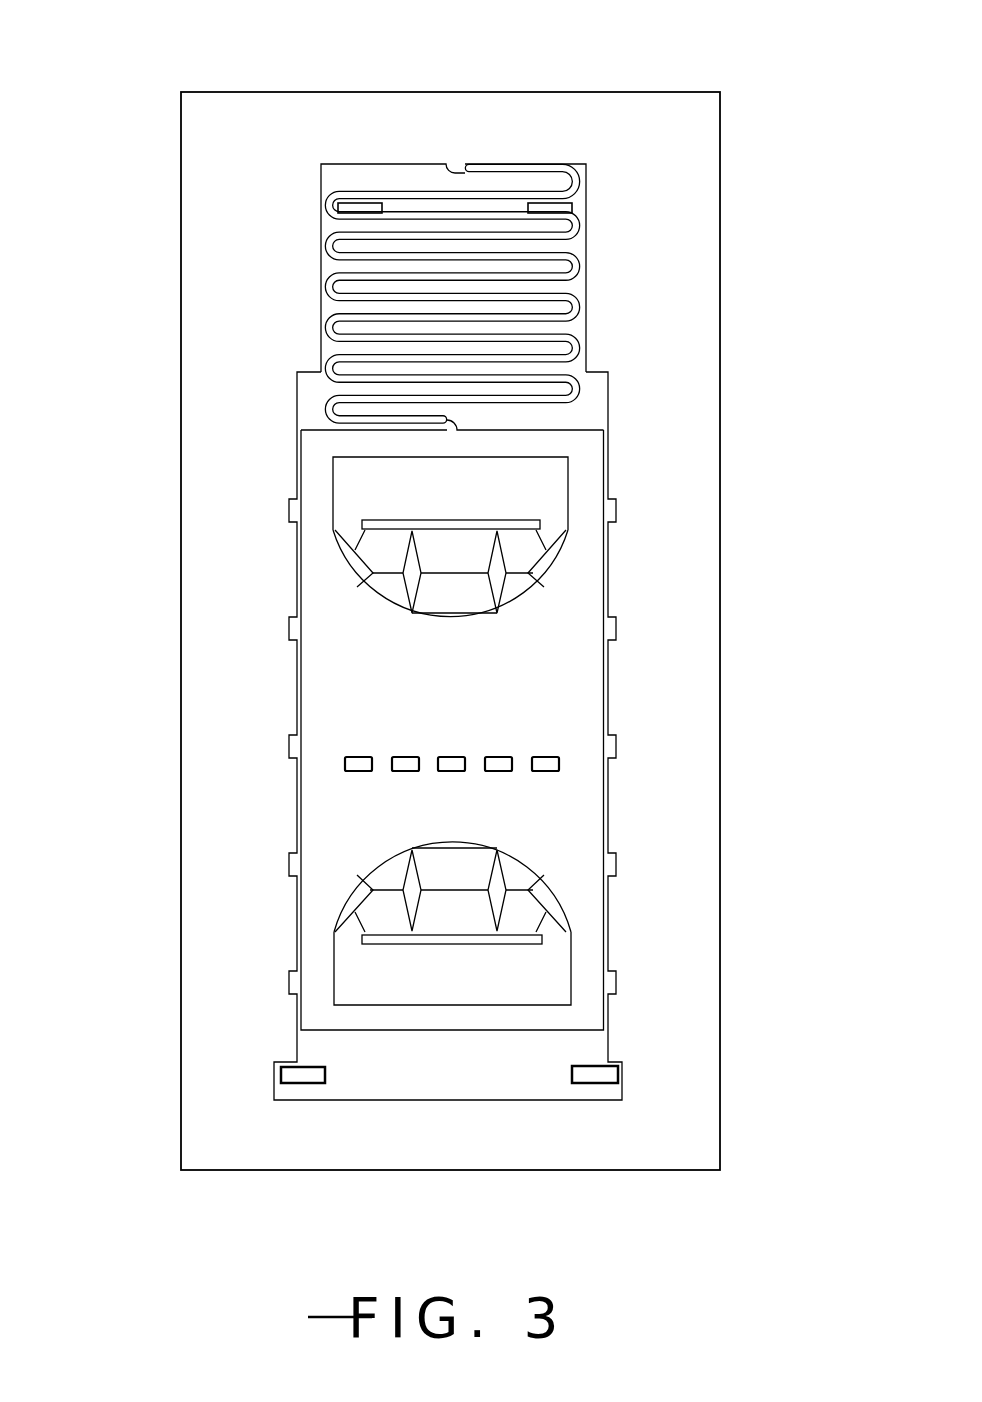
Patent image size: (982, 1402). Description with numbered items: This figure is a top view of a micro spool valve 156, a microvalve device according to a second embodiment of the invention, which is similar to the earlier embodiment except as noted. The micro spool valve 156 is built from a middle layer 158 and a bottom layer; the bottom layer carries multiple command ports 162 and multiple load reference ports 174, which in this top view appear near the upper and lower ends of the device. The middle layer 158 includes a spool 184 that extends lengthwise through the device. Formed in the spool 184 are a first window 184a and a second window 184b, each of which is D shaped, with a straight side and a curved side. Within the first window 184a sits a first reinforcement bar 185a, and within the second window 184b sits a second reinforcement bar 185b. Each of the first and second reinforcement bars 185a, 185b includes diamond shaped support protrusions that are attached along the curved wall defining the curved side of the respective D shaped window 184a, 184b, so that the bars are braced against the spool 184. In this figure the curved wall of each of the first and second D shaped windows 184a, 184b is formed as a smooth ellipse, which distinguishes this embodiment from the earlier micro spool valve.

The micro spool valve 156 is at (421, 82).
The middle layer 158 is at (583, 133).
The command ports 162 is at (352, 203).
The load reference ports 174 is at (325, 1074).
The spool 184 is at (353, 630).
The first window 184a is at (346, 462).
The second window 184b is at (347, 895).
The first reinforcement bar 185a is at (427, 520).
The second reinforcement bar 185b is at (453, 945).